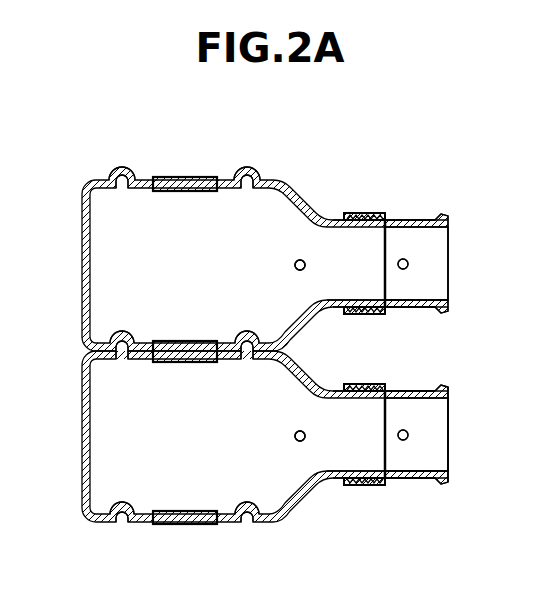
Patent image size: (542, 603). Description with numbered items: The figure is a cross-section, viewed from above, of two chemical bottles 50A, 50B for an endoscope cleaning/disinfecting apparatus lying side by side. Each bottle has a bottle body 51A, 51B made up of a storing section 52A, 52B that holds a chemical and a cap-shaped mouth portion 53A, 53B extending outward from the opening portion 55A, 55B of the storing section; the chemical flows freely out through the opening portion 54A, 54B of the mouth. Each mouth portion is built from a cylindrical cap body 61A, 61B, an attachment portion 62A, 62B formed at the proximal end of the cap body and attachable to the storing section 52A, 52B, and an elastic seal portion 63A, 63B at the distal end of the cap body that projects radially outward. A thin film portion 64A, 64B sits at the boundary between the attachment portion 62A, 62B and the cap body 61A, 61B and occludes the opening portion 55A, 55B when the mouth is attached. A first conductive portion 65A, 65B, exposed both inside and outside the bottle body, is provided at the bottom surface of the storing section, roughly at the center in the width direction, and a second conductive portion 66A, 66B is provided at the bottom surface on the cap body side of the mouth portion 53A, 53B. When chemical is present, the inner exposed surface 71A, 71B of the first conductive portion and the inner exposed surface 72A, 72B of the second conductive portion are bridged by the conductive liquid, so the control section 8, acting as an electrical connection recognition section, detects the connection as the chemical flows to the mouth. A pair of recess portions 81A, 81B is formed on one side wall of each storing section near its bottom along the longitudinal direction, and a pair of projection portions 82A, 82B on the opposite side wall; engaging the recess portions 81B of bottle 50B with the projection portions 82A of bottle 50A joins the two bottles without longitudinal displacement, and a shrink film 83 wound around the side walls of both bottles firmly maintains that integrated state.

The control section 8 is at (492, 405).
The chemical bottle 50A is at (80, 430).
The chemical bottle 50B is at (80, 258).
The bottle body 51A is at (446, 350).
The bottle body 51B is at (446, 178).
The storing section 52A is at (332, 391).
The storing section 52B is at (332, 220).
The mouth portion 53A is at (412, 398).
The mouth portion 53B is at (412, 227).
The opening portion 54A is at (449, 391).
The opening portion 54B is at (449, 220).
The opening portion 55A is at (384, 452).
The opening portion 55B is at (388, 278).
The cap body 61A is at (420, 435).
The cap body 61B is at (420, 264).
The attachment portion 62A is at (343, 399).
The attachment portion 62B is at (343, 228).
The seal portion 63A is at (448, 483).
The seal portion 63B is at (448, 312).
The thin film portion 64A is at (391, 452).
The thin film portion 64B is at (381, 250).
The first conductive portion 65A is at (288, 436).
The first conductive portion 65B is at (288, 265).
The second conductive portion 66A is at (414, 443).
The second conductive portion 66B is at (414, 272).
The inner exposed surface 71A is at (298, 430).
The inner exposed surface 71B is at (298, 259).
The inner exposed surface 72A is at (409, 434).
The inner exposed surface 72B is at (409, 262).
The recess portion 81A is at (125, 523).
The recess portion 81B is at (122, 331).
The projection portion 82A is at (124, 360).
The projection portion 82B is at (121, 167).
The shrink film 83 is at (187, 177).